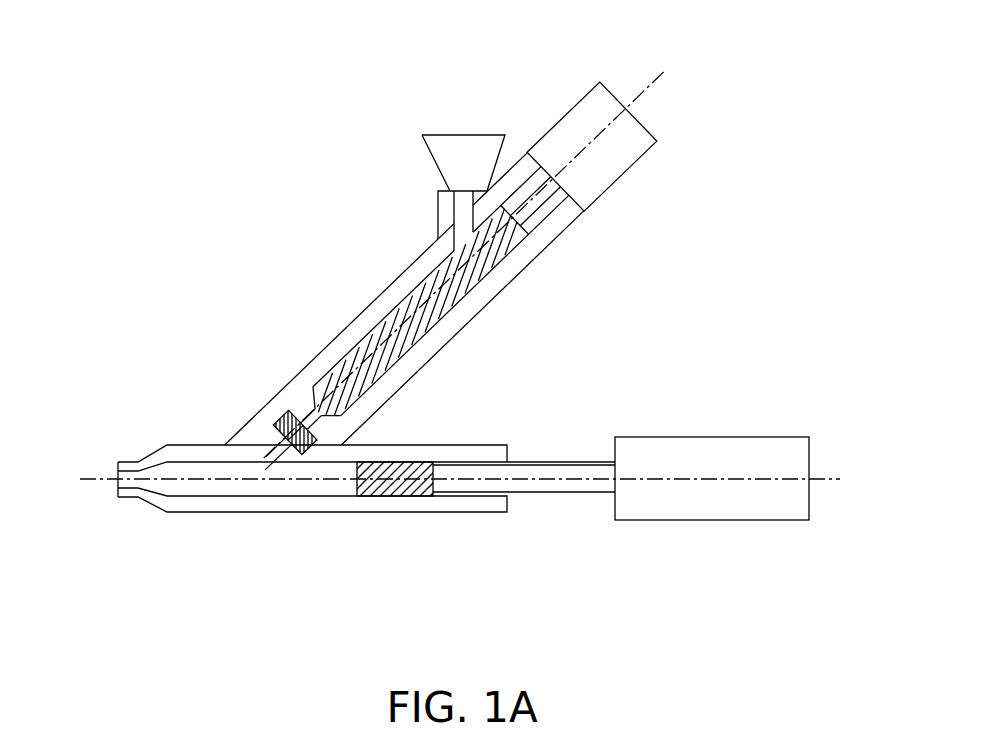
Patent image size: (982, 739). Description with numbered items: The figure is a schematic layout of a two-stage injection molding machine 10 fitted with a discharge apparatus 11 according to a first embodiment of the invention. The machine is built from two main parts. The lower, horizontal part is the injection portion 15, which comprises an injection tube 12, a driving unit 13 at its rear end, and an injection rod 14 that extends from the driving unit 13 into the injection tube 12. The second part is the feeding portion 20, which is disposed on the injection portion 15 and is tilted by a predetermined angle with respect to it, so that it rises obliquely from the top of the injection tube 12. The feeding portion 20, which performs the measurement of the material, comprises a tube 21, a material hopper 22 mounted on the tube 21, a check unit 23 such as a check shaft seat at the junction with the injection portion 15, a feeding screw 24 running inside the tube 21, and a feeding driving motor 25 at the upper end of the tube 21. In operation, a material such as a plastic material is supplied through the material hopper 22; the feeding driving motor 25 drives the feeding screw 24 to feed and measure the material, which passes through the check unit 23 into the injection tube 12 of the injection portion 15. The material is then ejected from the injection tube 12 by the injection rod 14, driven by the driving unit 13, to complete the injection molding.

The two-stage injection molding machine 10 is at (120, 288).
The discharge apparatus 11 is at (225, 403).
The injection tube 12 is at (297, 478).
The driving unit 13 is at (715, 492).
The injection rod 14 is at (392, 494).
The injection portion 15 is at (677, 596).
The feeding portion 20 is at (470, 2).
The tube 21 is at (387, 300).
The material hopper 22 is at (477, 152).
The check unit 23 is at (273, 403).
The feeding screw 24 is at (420, 283).
The feeding driving motor 25 is at (573, 128).